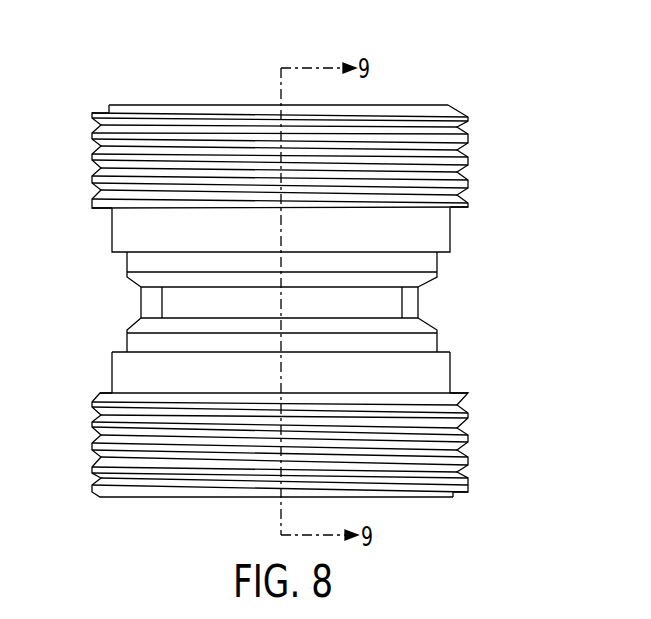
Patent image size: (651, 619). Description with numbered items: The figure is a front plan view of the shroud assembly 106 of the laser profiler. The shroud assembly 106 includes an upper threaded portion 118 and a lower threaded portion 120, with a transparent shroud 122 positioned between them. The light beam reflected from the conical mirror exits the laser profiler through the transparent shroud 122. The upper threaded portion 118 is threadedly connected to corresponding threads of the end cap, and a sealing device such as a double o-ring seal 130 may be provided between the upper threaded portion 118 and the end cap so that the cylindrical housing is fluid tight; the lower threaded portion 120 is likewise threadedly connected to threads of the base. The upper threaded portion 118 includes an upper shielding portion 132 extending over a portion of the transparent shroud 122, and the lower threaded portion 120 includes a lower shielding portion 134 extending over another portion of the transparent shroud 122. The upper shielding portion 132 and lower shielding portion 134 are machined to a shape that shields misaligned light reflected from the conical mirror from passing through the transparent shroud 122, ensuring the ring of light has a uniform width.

The shroud assembly 106 is at (509, 113).
The upper threaded portion 118 is at (105, 183).
The lower threaded portion 120 is at (462, 417).
The transparent shroud 122 is at (408, 305).
The double o-ring seal 130 is at (428, 107).
The upper shielding portion 132 is at (126, 268).
The lower shielding portion 134 is at (126, 341).